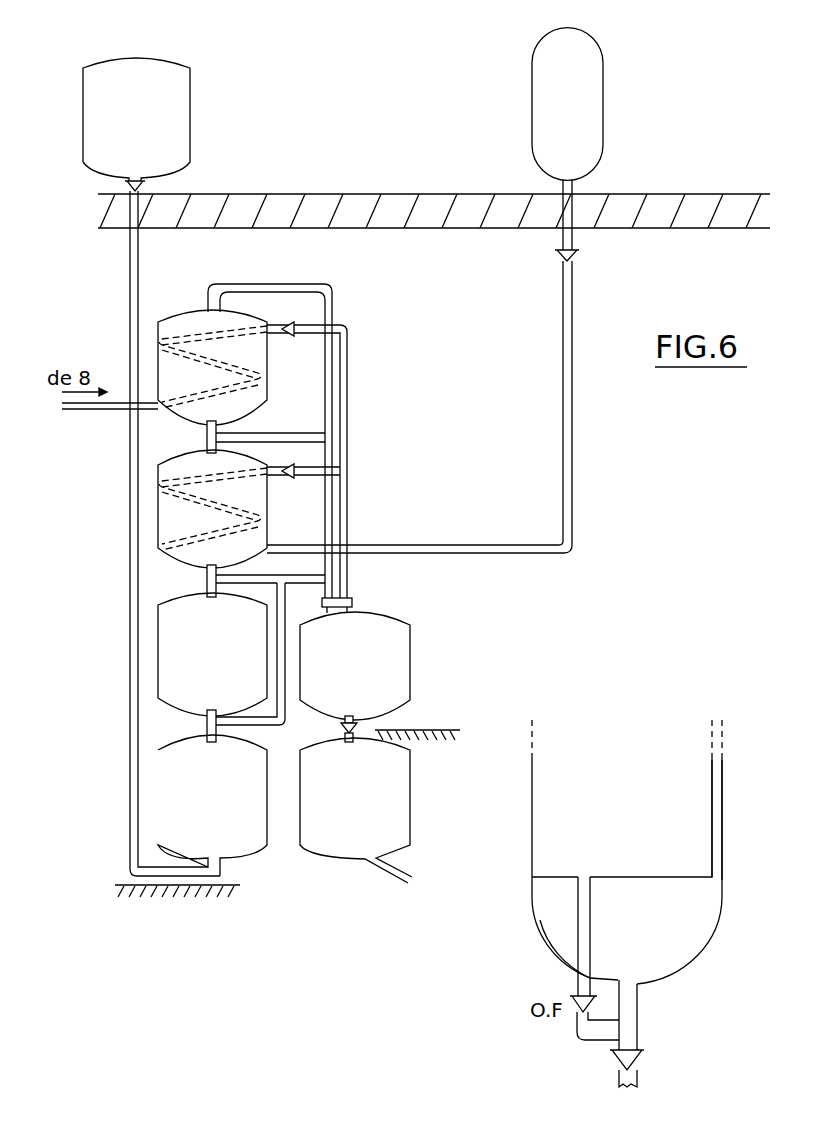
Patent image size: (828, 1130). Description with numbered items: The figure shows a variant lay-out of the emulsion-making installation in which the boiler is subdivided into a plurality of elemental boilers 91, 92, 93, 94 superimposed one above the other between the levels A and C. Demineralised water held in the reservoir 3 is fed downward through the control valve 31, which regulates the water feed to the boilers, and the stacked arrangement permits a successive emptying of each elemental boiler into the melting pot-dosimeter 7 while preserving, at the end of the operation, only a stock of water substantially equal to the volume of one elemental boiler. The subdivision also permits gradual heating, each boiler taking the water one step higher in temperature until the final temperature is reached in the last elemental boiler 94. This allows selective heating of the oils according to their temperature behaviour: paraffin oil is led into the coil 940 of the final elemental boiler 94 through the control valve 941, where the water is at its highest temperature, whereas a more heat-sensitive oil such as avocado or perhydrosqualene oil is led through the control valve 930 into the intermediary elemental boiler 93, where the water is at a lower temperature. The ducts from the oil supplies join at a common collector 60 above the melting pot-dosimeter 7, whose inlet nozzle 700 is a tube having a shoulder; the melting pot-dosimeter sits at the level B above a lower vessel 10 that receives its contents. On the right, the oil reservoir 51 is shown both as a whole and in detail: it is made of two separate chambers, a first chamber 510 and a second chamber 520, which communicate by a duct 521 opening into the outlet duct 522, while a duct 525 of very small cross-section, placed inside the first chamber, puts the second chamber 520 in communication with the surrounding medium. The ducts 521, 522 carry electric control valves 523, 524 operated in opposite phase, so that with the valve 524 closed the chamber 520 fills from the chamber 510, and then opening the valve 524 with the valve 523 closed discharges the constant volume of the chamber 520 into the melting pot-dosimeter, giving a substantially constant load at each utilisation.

The reservoir 3 is at (161, 72).
The control valve 31 is at (126, 186).
The level C is at (255, 193).
The final elemental boiler 94 is at (175, 344).
The coil 940 is at (186, 335).
The control valve 941 is at (286, 340).
The intermediary elemental boiler 93 is at (165, 526).
The control valve 930 is at (287, 478).
The elemental boiler 92 is at (165, 655).
The elemental boiler 91 is at (165, 793).
The level A is at (125, 884).
The common collector 60 is at (352, 598).
The melting pot-dosimeter 7 is at (412, 650).
The inlet nozzle 700 is at (342, 733).
The level B is at (450, 730).
The collection tank 10 is at (395, 805).
The oil reservoir 51 is at (590, 65).
The electric control valve 524 is at (575, 257).
The first chamber 510 is at (670, 767).
The duct 525 is at (718, 815).
The second chamber 520 is at (685, 950).
The duct 521 is at (575, 930).
The outlet duct 522 is at (640, 1030).
The electric control valve 523 is at (575, 1008).